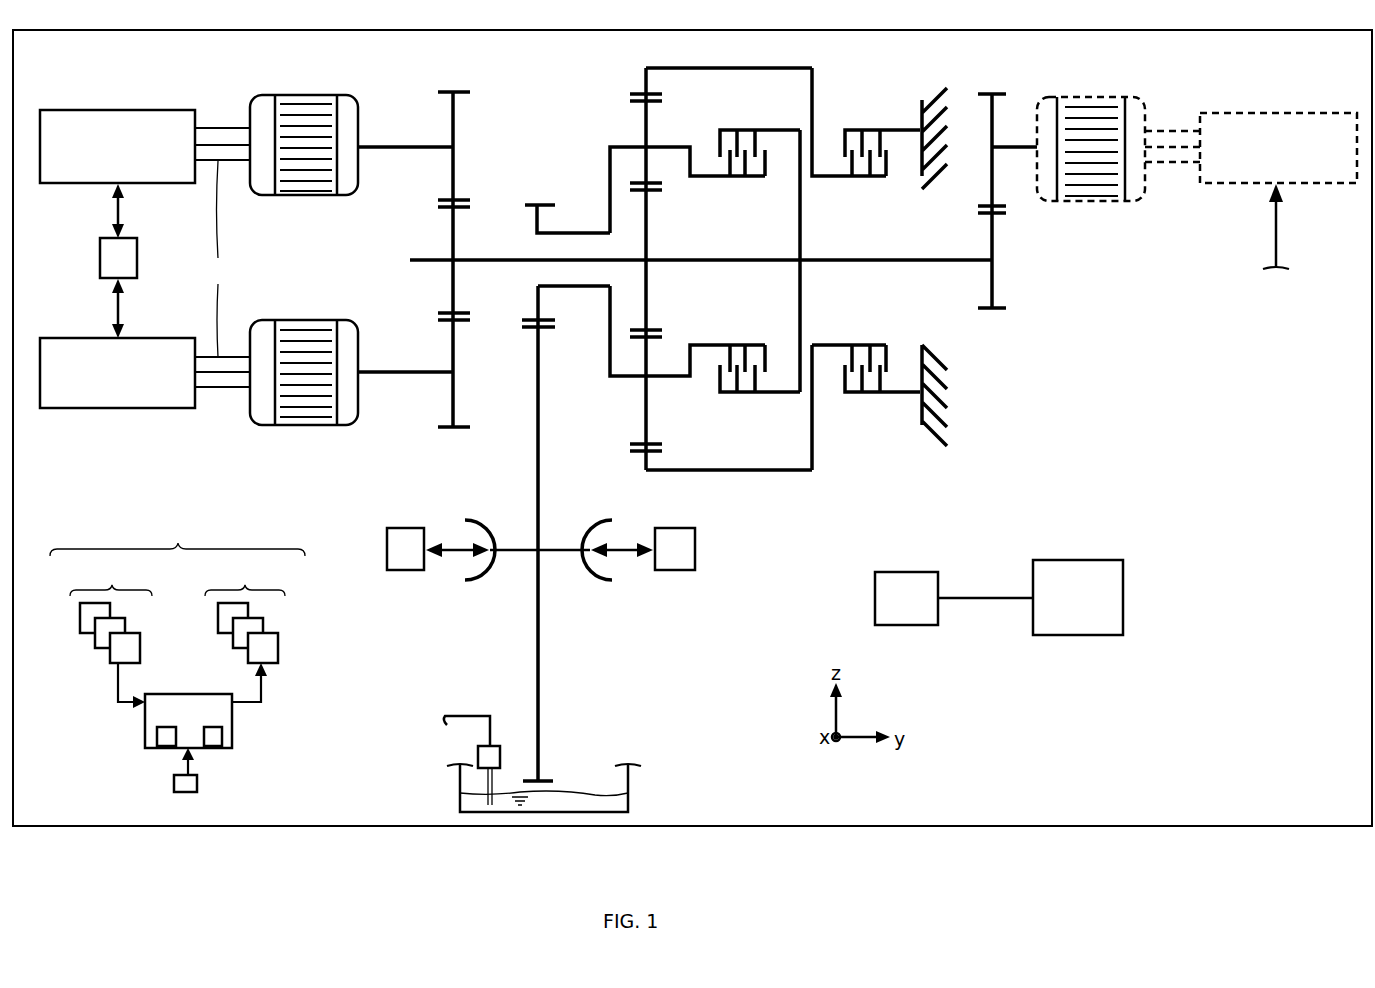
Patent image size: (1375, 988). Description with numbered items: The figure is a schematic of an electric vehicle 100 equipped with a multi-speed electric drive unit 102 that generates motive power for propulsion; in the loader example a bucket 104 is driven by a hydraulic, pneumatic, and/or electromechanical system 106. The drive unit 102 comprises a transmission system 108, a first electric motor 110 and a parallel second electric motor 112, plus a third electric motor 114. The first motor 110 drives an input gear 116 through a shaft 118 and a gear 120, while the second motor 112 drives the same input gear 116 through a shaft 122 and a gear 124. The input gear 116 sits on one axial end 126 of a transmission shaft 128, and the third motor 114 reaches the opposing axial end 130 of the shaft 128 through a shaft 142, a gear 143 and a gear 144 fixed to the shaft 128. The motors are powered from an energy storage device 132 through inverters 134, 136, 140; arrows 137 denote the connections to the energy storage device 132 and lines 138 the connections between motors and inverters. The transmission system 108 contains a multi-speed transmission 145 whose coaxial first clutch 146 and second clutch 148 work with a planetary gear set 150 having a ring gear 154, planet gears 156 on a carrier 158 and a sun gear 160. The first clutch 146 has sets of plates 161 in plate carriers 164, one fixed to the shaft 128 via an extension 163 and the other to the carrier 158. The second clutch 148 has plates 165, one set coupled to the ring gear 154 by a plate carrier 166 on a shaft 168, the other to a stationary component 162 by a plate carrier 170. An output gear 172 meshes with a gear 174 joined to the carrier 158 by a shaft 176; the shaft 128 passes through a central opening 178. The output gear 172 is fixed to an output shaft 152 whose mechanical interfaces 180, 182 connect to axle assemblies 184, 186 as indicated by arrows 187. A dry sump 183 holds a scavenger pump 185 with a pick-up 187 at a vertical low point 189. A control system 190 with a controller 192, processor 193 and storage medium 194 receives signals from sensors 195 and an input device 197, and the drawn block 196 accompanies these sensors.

The electric vehicle 100 is at (62, 30).
The multi-speed electric drive unit 102 is at (43, 72).
The bucket 104 is at (1074, 560).
The hydraulic, pneumatic, and/or electromechanical system 106 is at (904, 572).
The transmission system 108 is at (364, 68).
The first electric motor 110 is at (284, 95).
The second electric motor 112 is at (284, 320).
The electric motor 114 is at (1060, 97).
The input gear 116 is at (446, 313).
The shaft 118 is at (383, 146).
The gear 120 is at (442, 90).
The shaft 122 is at (383, 371).
The gear 124 is at (443, 430).
The axial end 126 is at (378, 250).
The transmission shaft 128 is at (415, 258).
The axial end 130 is at (1032, 268).
The energy storage device 132 is at (100, 259).
The inverter 134 is at (49, 112).
The inverter 136 is at (49, 338).
The arrows 137 is at (116, 213).
The lines 138 is at (1170, 112).
The inverter 140 is at (1208, 113).
The shaft 142 is at (1022, 150).
The gear 143 is at (995, 91).
The gear 144 is at (996, 310).
The multi-speed transmission 145 is at (412, 97).
The first clutch 146 is at (740, 108).
The second clutch 148 is at (863, 102).
The planetary gear set 150 is at (589, 67).
The transmission shaft 152 is at (570, 548).
The ring gear 154 is at (643, 95).
The planet gears 156 is at (664, 183).
The carrier 158 is at (620, 146).
The sun gear 160 is at (651, 330).
The plates 161 is at (700, 133).
The stationary component 162 is at (920, 106).
The extension 163 is at (798, 222).
The plate carriers 164 is at (766, 129).
The plates 165 is at (836, 135).
The plate carrier 166 is at (860, 180).
The shaft 168 is at (800, 68).
The plate carrier 170 is at (887, 130).
The output gear 172 is at (549, 780).
The gear 174 is at (536, 200).
The shaft 176 is at (578, 231).
The central opening 178 is at (525, 246).
The mechanical interface 180 is at (468, 520).
The mechanical interface 182 is at (613, 520).
The dry sump 183 is at (590, 785).
The axle assembly 184 is at (404, 527).
The scavenger pump 185 is at (478, 755).
The axle assembly 186 is at (678, 527).
The arrows 187 is at (458, 556).
The vertical low point 189 is at (470, 798).
The control system 190 is at (177, 537).
The controller 192 is at (188, 721).
The processor 193 is at (157, 737).
The electronic storage medium 194 is at (222, 737).
The sensors 195 is at (111, 634).
The actuators 196 is at (245, 631).
The input device 197 is at (197, 783).